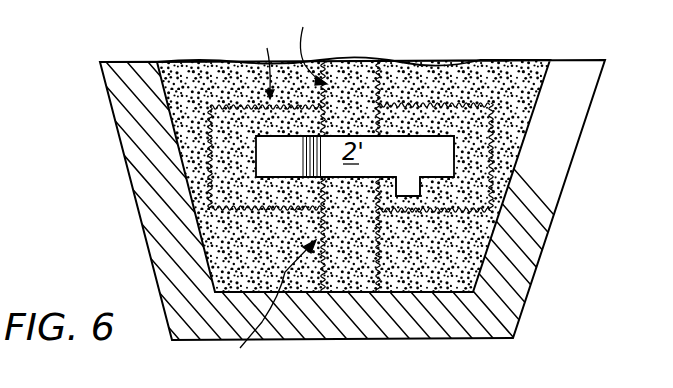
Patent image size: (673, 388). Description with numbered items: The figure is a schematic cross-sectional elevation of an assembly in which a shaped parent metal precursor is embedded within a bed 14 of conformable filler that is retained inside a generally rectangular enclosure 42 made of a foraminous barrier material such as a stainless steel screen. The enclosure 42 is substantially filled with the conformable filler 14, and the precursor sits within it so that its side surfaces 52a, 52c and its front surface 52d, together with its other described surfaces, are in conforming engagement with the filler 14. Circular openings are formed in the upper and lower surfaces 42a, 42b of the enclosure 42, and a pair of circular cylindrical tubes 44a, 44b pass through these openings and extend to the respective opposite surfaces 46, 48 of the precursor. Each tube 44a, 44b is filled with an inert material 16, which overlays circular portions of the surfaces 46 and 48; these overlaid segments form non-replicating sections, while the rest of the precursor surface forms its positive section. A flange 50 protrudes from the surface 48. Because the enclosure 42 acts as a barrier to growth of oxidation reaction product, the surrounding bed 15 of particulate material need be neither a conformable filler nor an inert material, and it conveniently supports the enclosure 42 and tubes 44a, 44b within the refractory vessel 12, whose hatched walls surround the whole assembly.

The mold body 12 is at (512, 290).
The bed of conformable filler 14 is at (440, 118).
The bed of particulate material 15 is at (516, 78).
The inert material 16 is at (360, 80).
The enclosure 42 is at (267, 63).
The upper surface of enclosure 42a is at (416, 102).
The lower surface of enclosure 42b is at (413, 213).
The tube 44a is at (314, 44).
The tube 44b is at (264, 308).
The surface of parent metal precursor 46 is at (452, 130).
The surface of parent metal precursor 48 is at (240, 218).
The flange 50 is at (410, 185).
The side surface 52a is at (258, 163).
The side surface 52c is at (460, 152).
The front surface 52d is at (273, 153).